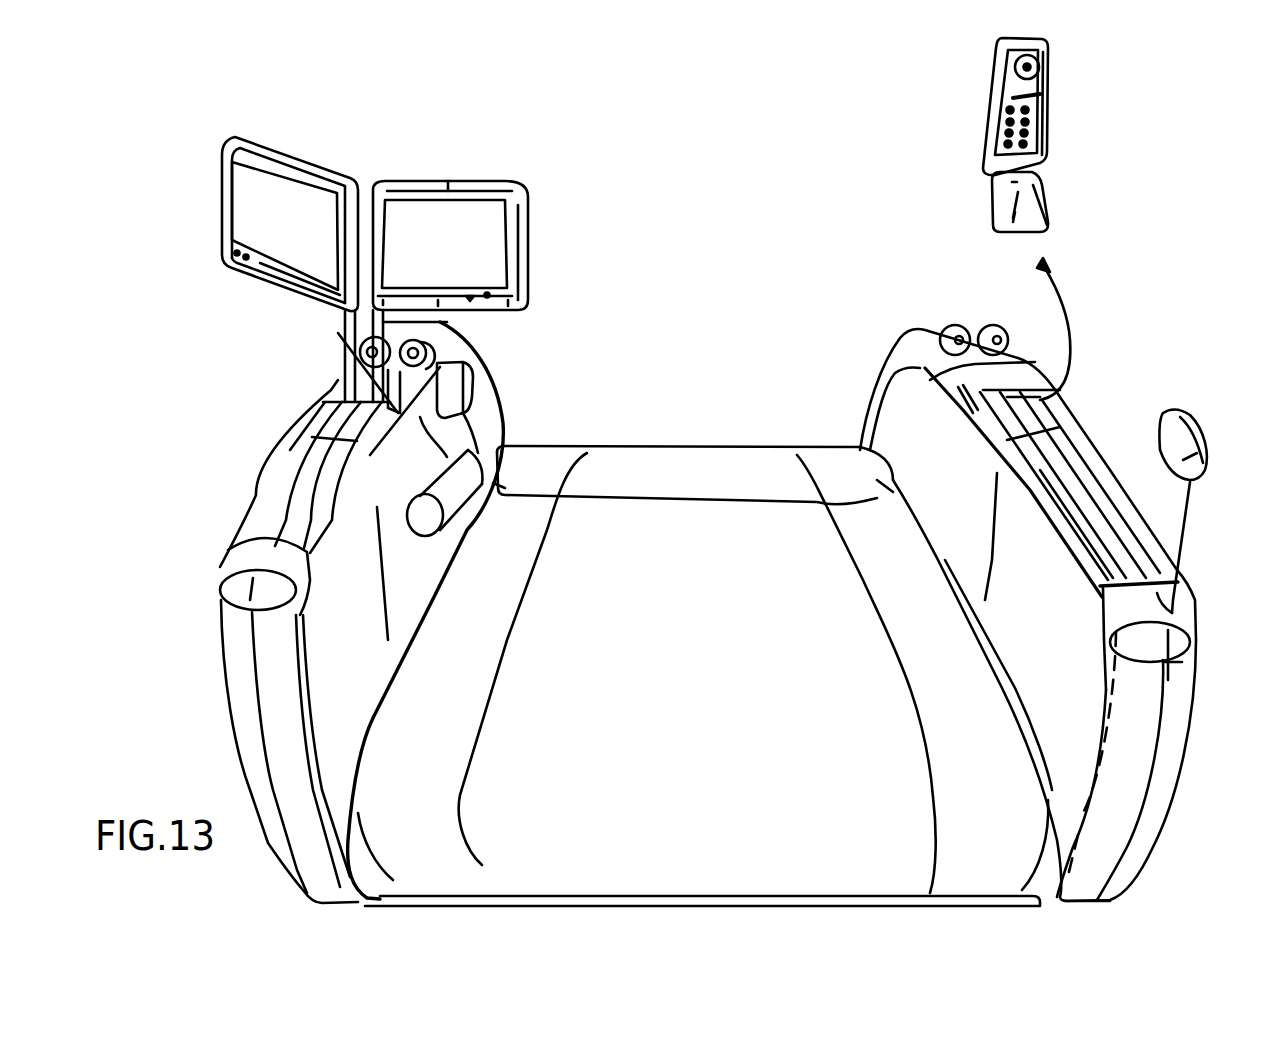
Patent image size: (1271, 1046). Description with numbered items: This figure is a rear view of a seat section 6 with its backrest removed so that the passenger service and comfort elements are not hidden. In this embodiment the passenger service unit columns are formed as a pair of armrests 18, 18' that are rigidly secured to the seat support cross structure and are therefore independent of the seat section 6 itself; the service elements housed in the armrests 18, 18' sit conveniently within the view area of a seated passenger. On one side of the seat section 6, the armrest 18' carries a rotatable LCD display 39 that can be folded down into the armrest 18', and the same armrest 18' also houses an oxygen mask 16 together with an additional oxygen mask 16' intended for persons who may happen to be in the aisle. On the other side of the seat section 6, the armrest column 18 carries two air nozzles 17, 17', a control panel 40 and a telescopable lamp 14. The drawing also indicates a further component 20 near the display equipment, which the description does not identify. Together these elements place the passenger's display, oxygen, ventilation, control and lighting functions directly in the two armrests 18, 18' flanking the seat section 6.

The seat section 6 is at (680, 708).
The telescopable lamp 14 is at (1200, 442).
The oxygen mask 16 is at (473, 348).
The additional oxygen mask 16' is at (336, 347).
The air nozzle 17 is at (936, 321).
The air nozzle 17' is at (1019, 329).
The armrest column 18 is at (1054, 615).
The armrest 18' is at (336, 612).
The video camera 20 is at (463, 475).
The rotatable LCD display 39 is at (512, 203).
The control panel 40 is at (312, 200).